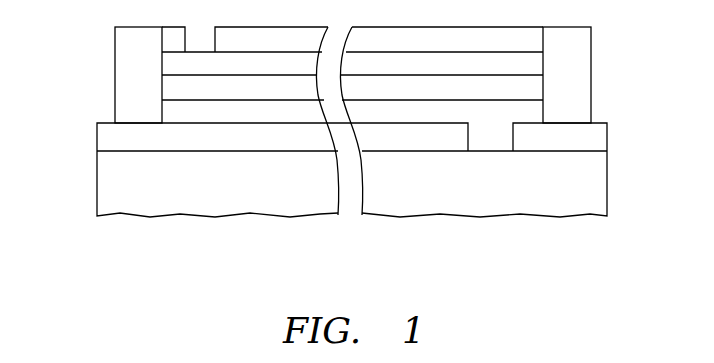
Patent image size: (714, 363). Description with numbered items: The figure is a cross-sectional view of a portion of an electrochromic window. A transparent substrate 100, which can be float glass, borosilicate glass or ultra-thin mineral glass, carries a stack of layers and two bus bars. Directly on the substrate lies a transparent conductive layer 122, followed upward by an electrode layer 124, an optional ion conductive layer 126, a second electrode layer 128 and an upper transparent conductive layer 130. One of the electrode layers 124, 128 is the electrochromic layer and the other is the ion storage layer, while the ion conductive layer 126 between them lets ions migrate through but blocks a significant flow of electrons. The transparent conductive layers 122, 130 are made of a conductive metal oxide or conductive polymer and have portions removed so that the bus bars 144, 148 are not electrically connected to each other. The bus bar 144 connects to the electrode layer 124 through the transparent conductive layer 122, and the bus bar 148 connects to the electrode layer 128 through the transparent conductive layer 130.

The substrate 100 is at (592, 198).
The transparent conductive layer 122 is at (107, 137).
The electrode layer 124 is at (205, 113).
The ion conductive layer 126 is at (272, 85).
The electrode layer 128 is at (378, 67).
The transparent conductive layer 130 is at (438, 43).
The bus bar 144 is at (130, 72).
The bus bar 148 is at (583, 70).